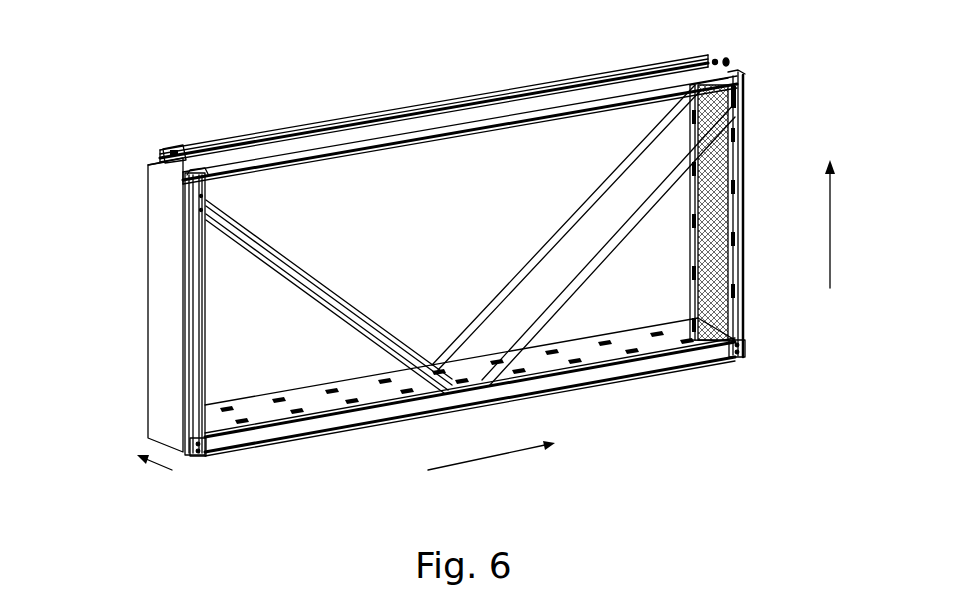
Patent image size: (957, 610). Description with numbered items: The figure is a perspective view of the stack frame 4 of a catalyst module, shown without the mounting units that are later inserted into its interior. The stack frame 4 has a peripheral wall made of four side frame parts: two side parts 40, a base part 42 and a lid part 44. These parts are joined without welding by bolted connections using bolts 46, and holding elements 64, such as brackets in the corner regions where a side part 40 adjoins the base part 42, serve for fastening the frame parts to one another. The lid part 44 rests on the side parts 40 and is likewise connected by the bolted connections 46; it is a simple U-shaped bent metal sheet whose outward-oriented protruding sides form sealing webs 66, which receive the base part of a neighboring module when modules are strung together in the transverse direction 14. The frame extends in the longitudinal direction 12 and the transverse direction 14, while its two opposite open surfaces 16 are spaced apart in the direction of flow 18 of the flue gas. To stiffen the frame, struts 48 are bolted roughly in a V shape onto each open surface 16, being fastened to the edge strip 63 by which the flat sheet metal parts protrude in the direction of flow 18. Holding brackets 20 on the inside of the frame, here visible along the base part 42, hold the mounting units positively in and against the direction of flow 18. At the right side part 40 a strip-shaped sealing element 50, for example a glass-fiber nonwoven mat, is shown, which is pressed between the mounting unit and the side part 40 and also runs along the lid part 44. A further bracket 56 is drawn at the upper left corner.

The stack frame 4 is at (178, 100).
The longitudinal direction 12 is at (491, 458).
The transverse direction 14 is at (830, 288).
The open surface 16 is at (402, 150).
The direction of flow 18 is at (160, 470).
The holding bracket 20 is at (302, 408).
The side part 40 is at (160, 293).
The base part 42 is at (346, 398).
The lid part 44 is at (538, 100).
The bolt 46 is at (200, 183).
The strut 48 is at (563, 300).
The sealing element 50 is at (708, 316).
The top bracket 56 is at (166, 157).
The edge strip 63 is at (195, 241).
The holding element 64 is at (745, 357).
The sealing web 66 is at (625, 90).